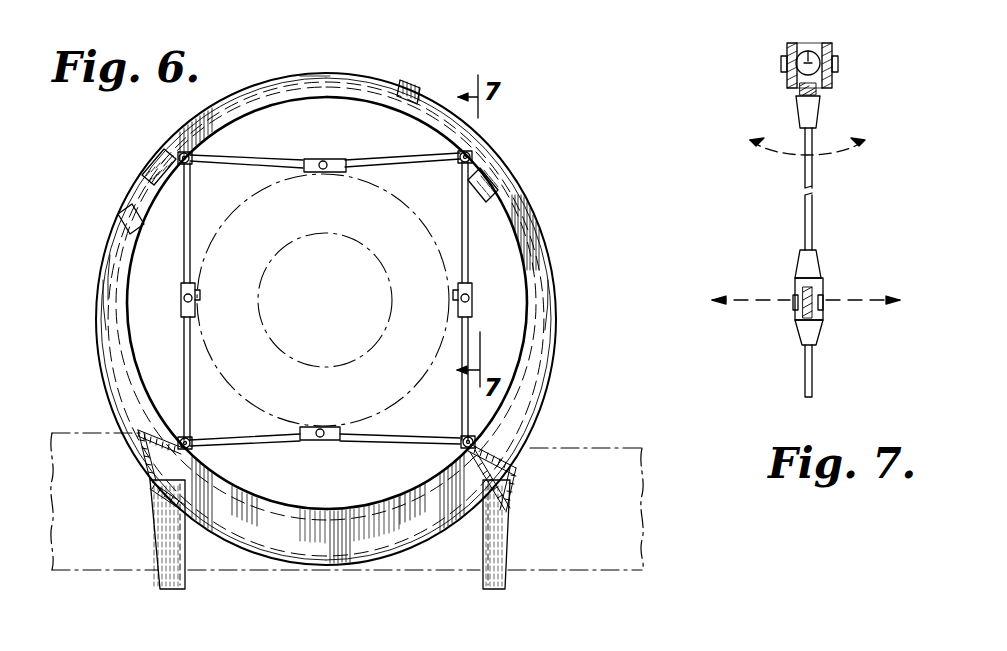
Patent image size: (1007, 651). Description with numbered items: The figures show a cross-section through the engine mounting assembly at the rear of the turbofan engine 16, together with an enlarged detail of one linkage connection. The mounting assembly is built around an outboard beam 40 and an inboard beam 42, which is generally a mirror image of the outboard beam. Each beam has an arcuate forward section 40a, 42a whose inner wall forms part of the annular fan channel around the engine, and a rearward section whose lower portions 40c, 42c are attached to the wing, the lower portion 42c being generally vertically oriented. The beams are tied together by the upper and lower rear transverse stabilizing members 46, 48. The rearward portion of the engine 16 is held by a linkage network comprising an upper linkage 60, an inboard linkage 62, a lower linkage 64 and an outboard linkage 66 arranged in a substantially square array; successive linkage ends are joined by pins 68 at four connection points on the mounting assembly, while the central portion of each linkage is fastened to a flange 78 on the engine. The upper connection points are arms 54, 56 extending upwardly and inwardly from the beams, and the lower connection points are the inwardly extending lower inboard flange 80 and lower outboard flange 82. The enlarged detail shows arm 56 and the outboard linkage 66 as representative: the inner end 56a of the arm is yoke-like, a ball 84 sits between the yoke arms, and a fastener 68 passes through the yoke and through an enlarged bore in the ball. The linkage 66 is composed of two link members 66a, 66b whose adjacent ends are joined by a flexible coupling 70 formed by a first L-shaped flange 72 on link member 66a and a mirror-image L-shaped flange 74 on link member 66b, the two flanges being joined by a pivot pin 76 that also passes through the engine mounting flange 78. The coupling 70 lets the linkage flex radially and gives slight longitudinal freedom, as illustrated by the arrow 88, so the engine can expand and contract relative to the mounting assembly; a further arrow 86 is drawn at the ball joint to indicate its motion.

In FIG. 6, the turbofan engine 16 is at (408, 188).
In FIG. 6, the outboard beam 40 is at (560, 270).
In FIG. 6, the forward section of the outboard beam 40a is at (545, 382).
In FIG. 6, the lower portion of the outboard beam 40c is at (495, 548).
In FIG. 6, the inboard beam 42 is at (98, 262).
In FIG. 6, the forward section of the inboard beam 42a is at (118, 378).
In FIG. 6, the lower portion of the inboard beam 42c is at (165, 530).
In FIG. 6, the upper rear transverse stabilizing member 46 is at (340, 80).
In FIG. 6, the lower rear transverse stabilizing member 48 is at (258, 537).
In FIG. 6, the inboard upper connecting arm 54 is at (152, 182).
In FIG. 6, the outboard upper connecting arm 56 is at (500, 183).
In FIG. 7, the inner end of arm 56a is at (800, 50).
In FIG. 6, the upper linkage 60 is at (250, 158).
In FIG. 6, the inboard linkage 62 is at (186, 252).
In FIG. 6, the lower linkage 64 is at (350, 452).
In FIG. 6, the outboard linkage 66 is at (468, 250).
In FIG. 7, the outboard linkage 66 is at (804, 214).
In FIG. 7, the link member 66a is at (805, 160).
In FIG. 7, the link member 66b is at (805, 355).
In FIG. 6, the pin 68 is at (185, 152).
In FIG. 7, the pin 68 is at (786, 63).
In FIG. 7, the flexible coupling 70 is at (826, 290).
In FIG. 7, the first L-shaped flange 72 is at (800, 266).
In FIG. 7, the mirror image L-shaped flange 74 is at (816, 325).
In FIG. 7, the pivot pin 76 is at (794, 304).
In FIG. 6, the mounting flange 78 is at (328, 172).
In FIG. 7, the mounting flange 78 is at (812, 284).
In FIG. 6, the lower inboard flange 80 is at (205, 458).
In FIG. 6, the lower outboard flange 82 is at (455, 456).
In FIG. 7, the ball 84 is at (818, 62).
In FIG. 7, the pivot motion arrow 86 is at (836, 138).
In FIG. 7, the arrow 88 is at (850, 302).